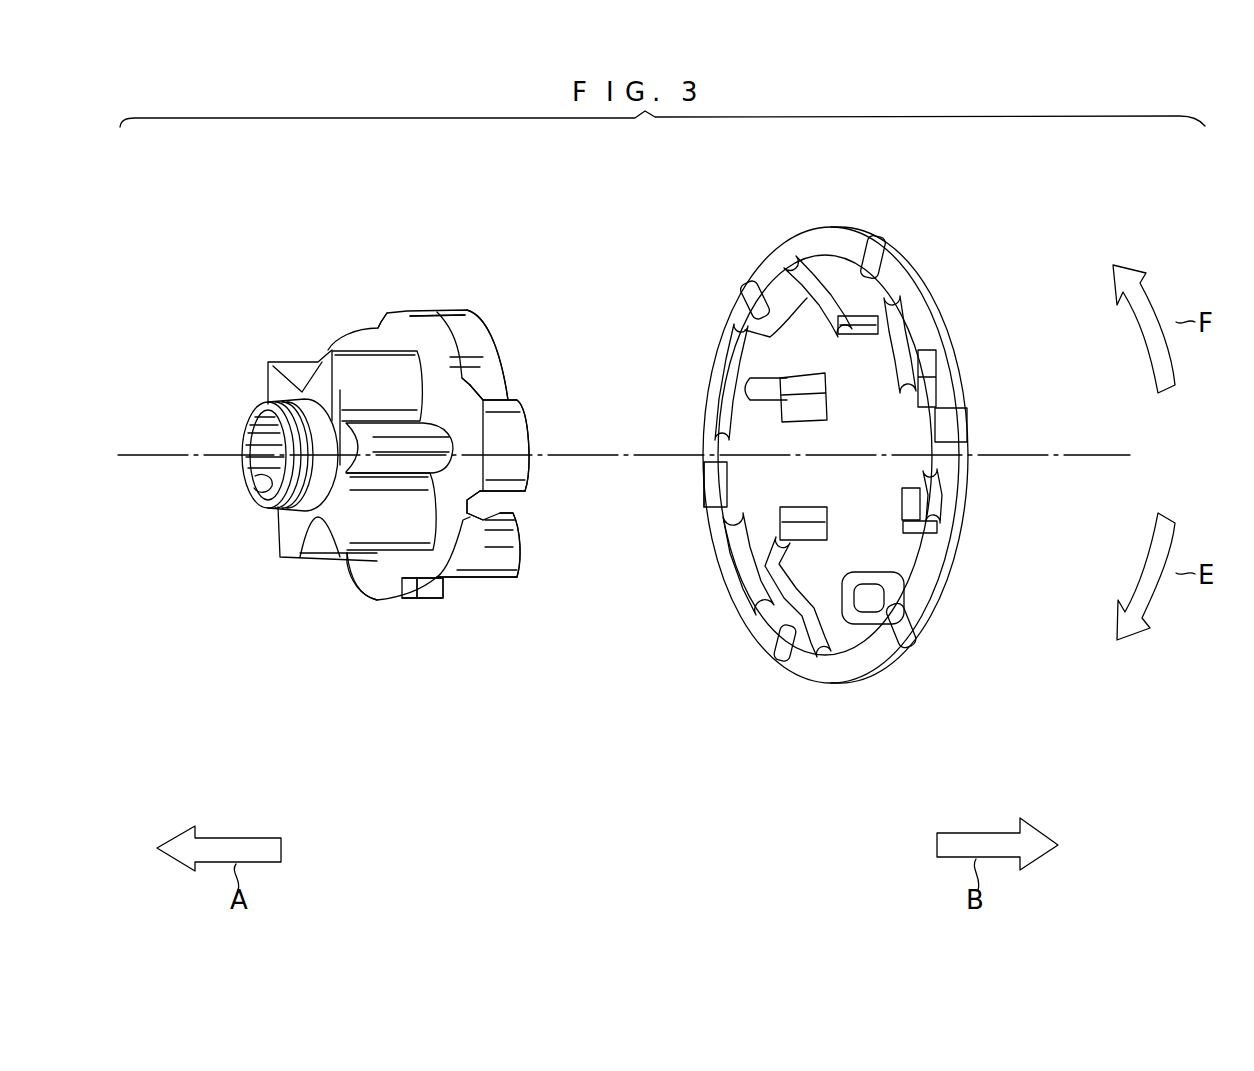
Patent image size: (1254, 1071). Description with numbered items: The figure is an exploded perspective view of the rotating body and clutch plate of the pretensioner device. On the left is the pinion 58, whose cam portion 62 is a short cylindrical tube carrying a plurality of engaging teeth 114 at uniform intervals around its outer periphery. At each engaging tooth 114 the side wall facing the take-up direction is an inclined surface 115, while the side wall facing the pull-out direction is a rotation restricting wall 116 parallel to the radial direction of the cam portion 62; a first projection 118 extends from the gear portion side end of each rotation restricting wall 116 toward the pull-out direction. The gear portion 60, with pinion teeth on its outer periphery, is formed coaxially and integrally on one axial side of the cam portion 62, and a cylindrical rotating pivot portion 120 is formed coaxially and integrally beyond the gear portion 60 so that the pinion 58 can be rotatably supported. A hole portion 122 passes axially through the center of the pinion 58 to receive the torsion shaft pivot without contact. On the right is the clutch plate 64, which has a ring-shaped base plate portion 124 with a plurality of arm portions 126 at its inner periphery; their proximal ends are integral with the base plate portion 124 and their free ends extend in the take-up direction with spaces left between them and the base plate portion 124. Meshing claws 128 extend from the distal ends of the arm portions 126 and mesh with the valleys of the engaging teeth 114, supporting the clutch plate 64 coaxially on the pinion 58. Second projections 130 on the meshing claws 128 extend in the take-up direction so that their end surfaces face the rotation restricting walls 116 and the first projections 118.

The pinion 58 is at (443, 290).
The gear portion 60 is at (288, 360).
The cam portion 62 is at (365, 595).
The clutch plate 64 is at (829, 216).
The engaging teeth 114 is at (468, 316).
The inclined surface 115 is at (470, 340).
The rotation restricting wall 116 is at (485, 385).
The first projection 118 is at (383, 320).
The rotating pivot portion 120 is at (250, 420).
The hole portion 122 is at (248, 468).
The base plate portion 124 is at (727, 580).
The arm portions 126 is at (802, 270).
The meshing claws 128 is at (932, 365).
The second projections 130 is at (878, 338).